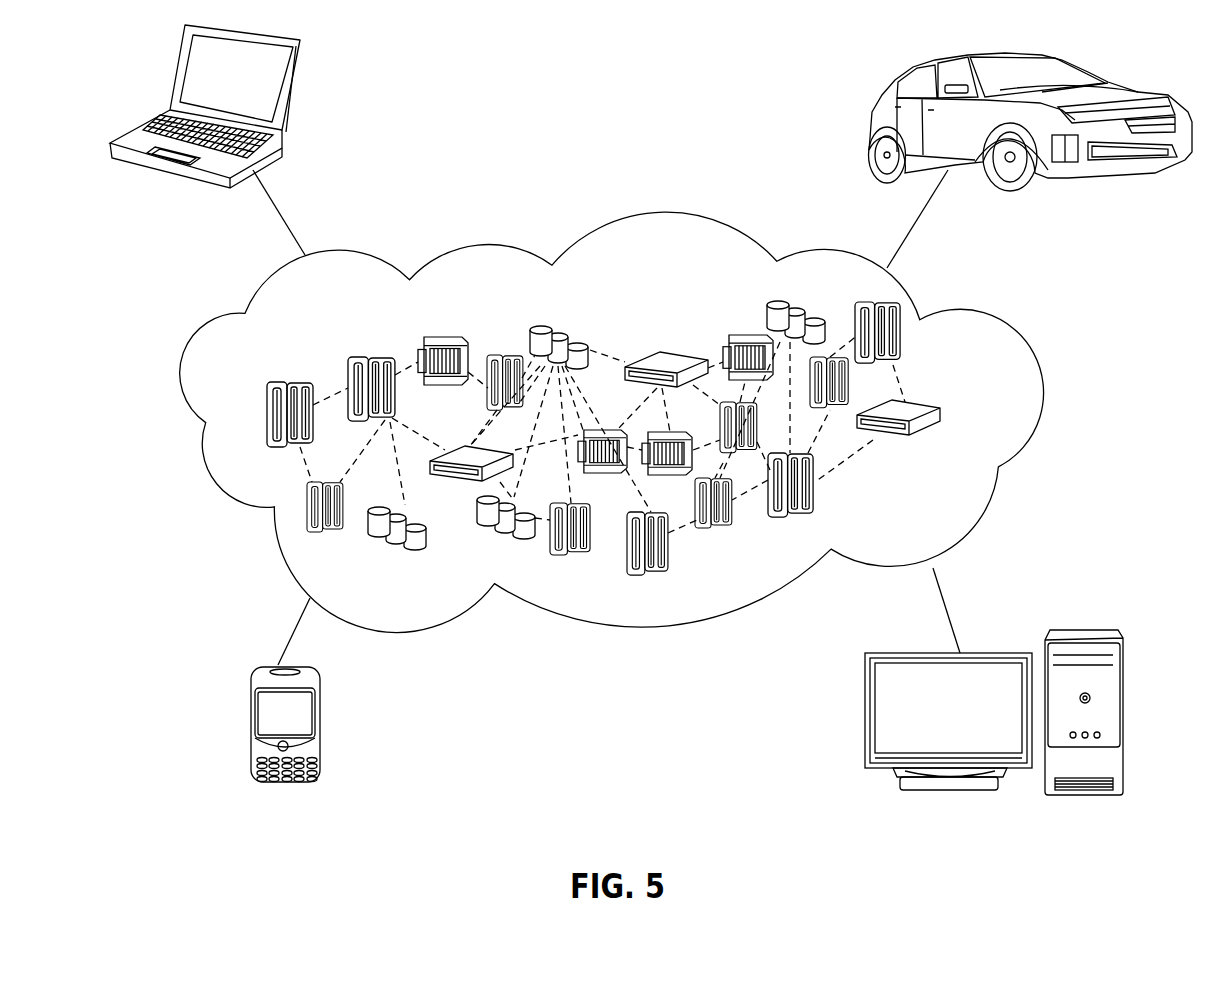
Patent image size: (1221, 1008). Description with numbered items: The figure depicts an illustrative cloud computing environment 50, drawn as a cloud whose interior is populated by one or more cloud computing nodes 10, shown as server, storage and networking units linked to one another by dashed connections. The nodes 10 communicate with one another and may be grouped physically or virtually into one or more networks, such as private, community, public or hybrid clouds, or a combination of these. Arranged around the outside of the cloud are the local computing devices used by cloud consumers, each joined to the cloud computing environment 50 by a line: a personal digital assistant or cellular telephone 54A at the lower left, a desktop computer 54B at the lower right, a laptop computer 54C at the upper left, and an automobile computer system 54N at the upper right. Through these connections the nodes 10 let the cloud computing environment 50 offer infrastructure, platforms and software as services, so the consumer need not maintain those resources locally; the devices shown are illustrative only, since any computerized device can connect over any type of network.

The cloud computing node 10 is at (644, 422).
The cloud computing environment 50 is at (978, 412).
The personal digital assistant (PDA) or cellular telephone 54A is at (250, 728).
The desktop computer 54B is at (1088, 628).
The laptop computer 54C is at (297, 92).
The automobile computer system 54N is at (875, 102).